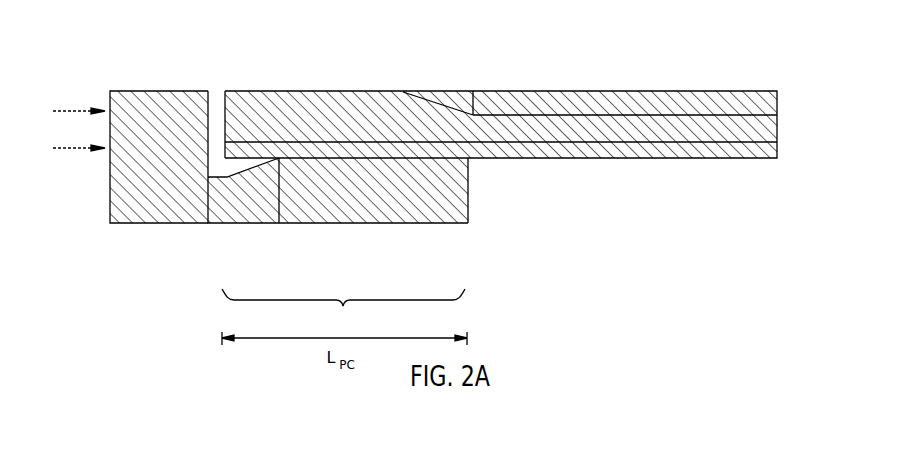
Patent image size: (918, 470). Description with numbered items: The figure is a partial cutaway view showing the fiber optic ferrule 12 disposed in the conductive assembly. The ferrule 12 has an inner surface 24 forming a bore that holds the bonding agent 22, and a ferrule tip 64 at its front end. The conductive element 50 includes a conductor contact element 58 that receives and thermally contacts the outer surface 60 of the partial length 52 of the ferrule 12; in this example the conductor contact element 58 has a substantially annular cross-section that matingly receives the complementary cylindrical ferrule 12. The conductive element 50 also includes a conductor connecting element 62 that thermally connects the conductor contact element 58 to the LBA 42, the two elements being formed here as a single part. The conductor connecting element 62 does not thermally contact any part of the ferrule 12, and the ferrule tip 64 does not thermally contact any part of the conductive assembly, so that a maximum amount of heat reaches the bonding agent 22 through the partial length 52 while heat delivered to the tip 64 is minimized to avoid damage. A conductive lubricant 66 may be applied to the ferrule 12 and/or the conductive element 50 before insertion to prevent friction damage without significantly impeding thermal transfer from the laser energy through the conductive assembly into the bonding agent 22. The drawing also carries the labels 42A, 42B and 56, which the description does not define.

The ferrule 12 is at (722, 145).
The bonding agent 22 is at (455, 102).
The inner surface 24 is at (110, 192).
The LBA 42 is at (132, 212).
The first flow 42A is at (75, 110).
The second flow 42B is at (72, 150).
The conductive element 50 is at (358, 222).
The partial length 52 is at (343, 309).
The gap 56 is at (215, 117).
The conductor contact element 58 is at (440, 218).
The outer surface 60 is at (527, 143).
The conductor connecting element 62 is at (244, 212).
The ferrule tip 64 is at (220, 100).
The conductive lubricant 66 is at (487, 155).